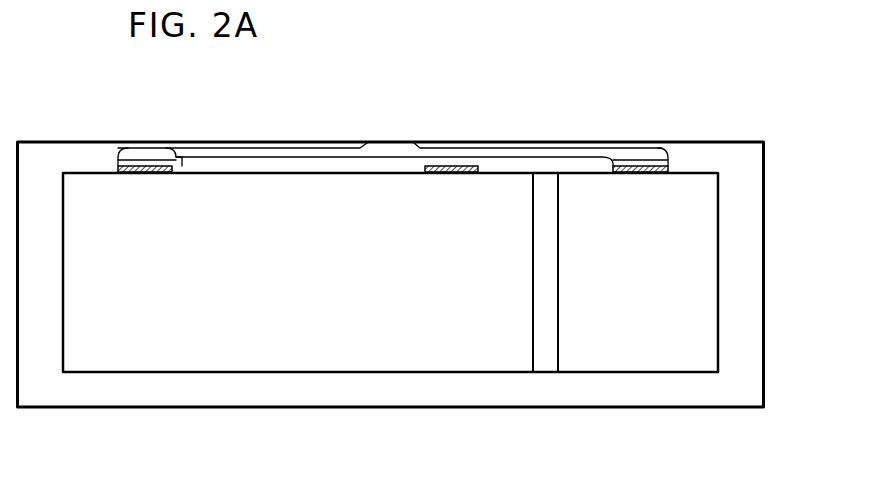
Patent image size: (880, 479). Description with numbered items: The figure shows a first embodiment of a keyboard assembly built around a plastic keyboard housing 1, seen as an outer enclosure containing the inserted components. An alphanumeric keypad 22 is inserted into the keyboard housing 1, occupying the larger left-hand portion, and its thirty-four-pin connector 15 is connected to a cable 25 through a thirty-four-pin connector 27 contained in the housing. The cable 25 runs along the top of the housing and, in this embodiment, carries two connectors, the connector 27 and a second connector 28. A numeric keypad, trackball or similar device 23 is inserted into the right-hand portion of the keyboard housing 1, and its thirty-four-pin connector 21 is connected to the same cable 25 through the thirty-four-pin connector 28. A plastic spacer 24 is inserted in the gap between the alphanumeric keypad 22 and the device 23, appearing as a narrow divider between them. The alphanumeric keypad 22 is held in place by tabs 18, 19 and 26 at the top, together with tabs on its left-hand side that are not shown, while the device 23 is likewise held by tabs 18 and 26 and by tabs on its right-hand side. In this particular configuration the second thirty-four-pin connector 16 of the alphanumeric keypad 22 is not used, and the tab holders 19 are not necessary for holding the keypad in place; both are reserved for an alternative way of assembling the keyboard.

The keyboard housing 1 is at (47, 141).
The 34-pin connector 15 is at (178, 157).
The 34-pin connector 16 is at (466, 166).
The tabs 18 is at (502, 169).
The tabs 19 is at (199, 169).
The 34-pin connector 21 is at (670, 168).
The alphanumeric keypad 22 is at (113, 350).
The numeric keypad, trackball or similar device 23 is at (697, 235).
The spacer 24 is at (545, 353).
The cable 25 is at (388, 145).
The tabs 26 is at (87, 168).
The 34-pin connector 27 is at (119, 150).
The 34-pin connector 28 is at (672, 157).